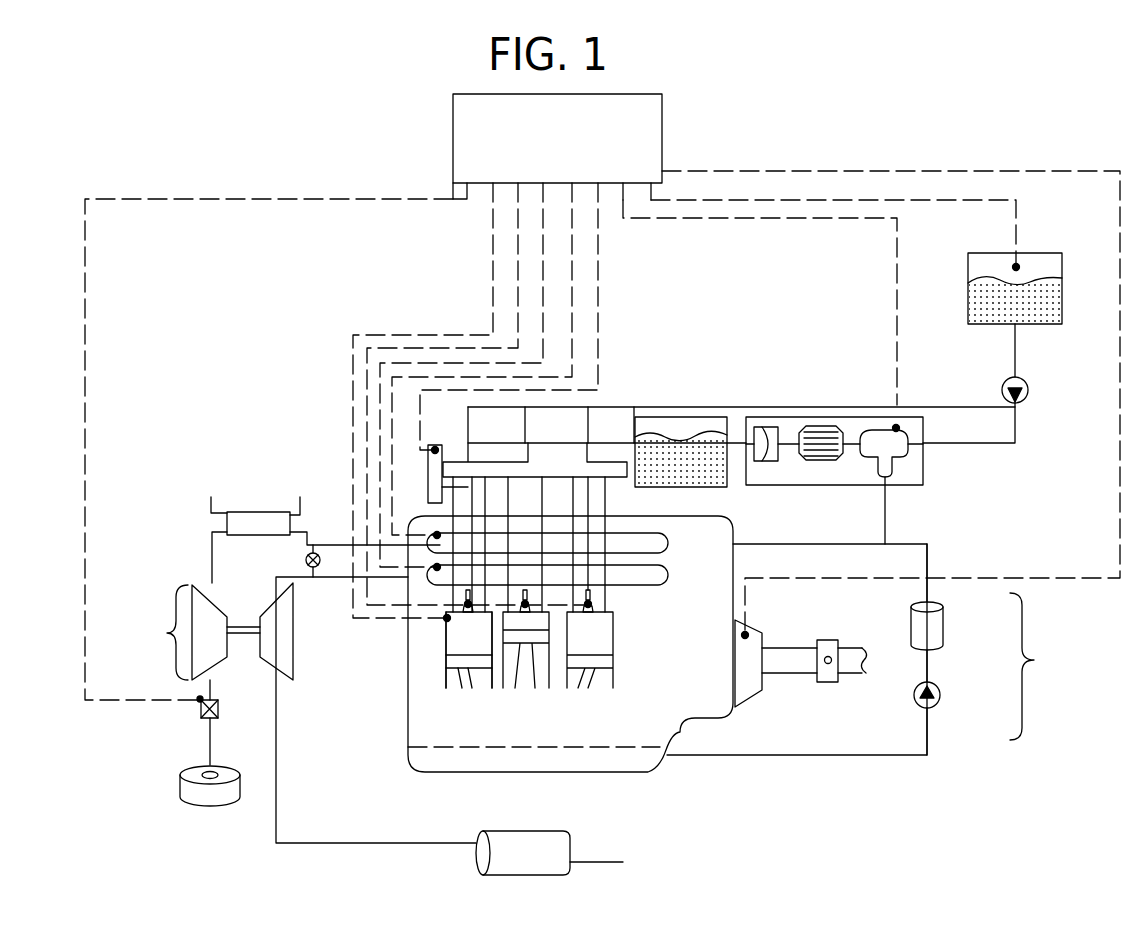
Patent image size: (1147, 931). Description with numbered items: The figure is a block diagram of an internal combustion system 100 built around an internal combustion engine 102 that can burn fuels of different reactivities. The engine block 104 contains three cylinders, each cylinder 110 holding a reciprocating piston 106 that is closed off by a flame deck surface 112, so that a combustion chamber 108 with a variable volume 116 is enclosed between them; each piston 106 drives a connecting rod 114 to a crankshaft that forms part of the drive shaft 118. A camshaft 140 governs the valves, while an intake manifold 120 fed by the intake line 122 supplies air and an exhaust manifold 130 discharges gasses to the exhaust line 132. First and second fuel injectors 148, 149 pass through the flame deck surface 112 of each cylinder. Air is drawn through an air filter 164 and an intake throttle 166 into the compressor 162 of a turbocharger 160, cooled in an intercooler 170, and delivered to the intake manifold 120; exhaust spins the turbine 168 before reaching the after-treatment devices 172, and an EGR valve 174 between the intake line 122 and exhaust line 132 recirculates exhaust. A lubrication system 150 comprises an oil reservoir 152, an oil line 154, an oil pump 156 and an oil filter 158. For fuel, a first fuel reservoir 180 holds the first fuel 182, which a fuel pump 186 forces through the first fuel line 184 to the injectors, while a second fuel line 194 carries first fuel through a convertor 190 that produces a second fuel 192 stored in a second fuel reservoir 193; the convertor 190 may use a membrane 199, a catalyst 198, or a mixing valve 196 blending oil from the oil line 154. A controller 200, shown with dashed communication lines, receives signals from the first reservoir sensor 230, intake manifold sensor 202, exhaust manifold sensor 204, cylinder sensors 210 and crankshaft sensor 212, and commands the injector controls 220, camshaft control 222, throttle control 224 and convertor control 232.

The internal combustion system 100 is at (404, 170).
The controller 200 is at (572, 151).
The first fuel reservoir 180 is at (999, 272).
The first fuel 182 is at (981, 297).
The first reservoir sensor 230 is at (1016, 267).
The fuel pump 186 is at (1029, 393).
The second fuel line 194 is at (975, 443).
The first fuel line 184 is at (653, 426).
The second fuel 192 is at (718, 463).
The second fuel reservoir 193 is at (665, 417).
The convertor 190 is at (869, 455).
The membrane 199 is at (773, 427).
The catalyst 198 is at (822, 426).
The convertor control 232 is at (898, 427).
The mixing valve 196 is at (903, 458).
The camshaft 140 is at (370, 412).
The camshaft control 222 is at (354, 387).
The internal combustion engine 102 is at (470, 483).
The intake manifold 120 is at (626, 532).
The intake manifold sensor 202 is at (435, 532).
The exhaust manifold sensor 204 is at (435, 566).
The injector controls 220 is at (462, 606).
The exhaust manifold 130 is at (684, 532).
The flame deck surface 112 is at (422, 707).
The cylinder 110 is at (445, 650).
The engine block 104 is at (440, 662).
The piston 106 is at (453, 662).
The connecting rod 114 is at (465, 668).
The variable volume 116 is at (458, 636).
The combustion chamber 108 is at (480, 690).
The cylinder sensors 210 is at (445, 618).
The first fuel injector 148 is at (555, 612).
The second fuel injector 149 is at (555, 612).
The crankshaft sensor 212 is at (748, 633).
The drive shaft 118 is at (786, 665).
The oil line 154 is at (795, 756).
The oil reservoir 152 is at (617, 772).
The lubrication system 150 is at (998, 649).
The oil filter 158 is at (933, 623).
The oil pump 156 is at (938, 705).
The turbocharger 160 is at (207, 606).
The compressor 162 is at (196, 583).
The turbine 168 is at (268, 612).
The intercooler 170 is at (253, 515).
The intake line 122 is at (313, 545).
The EGR valve 174 is at (306, 560).
The exhaust line 132 is at (376, 710).
The exhaust after-treatment devices 172 is at (515, 862).
The intake throttle 166 is at (174, 714).
The throttle control 224 is at (199, 698).
The air filter 164 is at (180, 774).